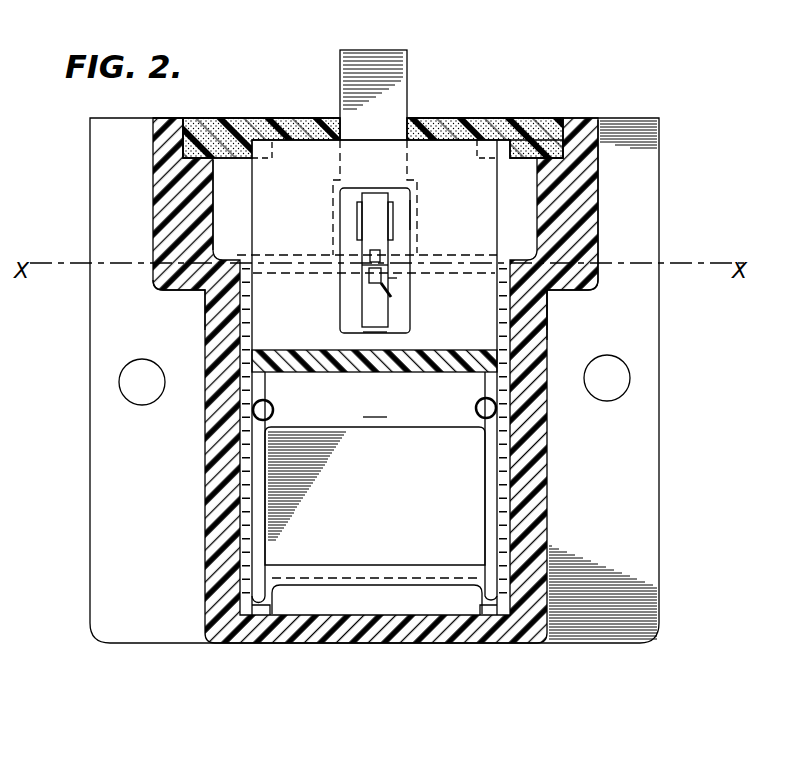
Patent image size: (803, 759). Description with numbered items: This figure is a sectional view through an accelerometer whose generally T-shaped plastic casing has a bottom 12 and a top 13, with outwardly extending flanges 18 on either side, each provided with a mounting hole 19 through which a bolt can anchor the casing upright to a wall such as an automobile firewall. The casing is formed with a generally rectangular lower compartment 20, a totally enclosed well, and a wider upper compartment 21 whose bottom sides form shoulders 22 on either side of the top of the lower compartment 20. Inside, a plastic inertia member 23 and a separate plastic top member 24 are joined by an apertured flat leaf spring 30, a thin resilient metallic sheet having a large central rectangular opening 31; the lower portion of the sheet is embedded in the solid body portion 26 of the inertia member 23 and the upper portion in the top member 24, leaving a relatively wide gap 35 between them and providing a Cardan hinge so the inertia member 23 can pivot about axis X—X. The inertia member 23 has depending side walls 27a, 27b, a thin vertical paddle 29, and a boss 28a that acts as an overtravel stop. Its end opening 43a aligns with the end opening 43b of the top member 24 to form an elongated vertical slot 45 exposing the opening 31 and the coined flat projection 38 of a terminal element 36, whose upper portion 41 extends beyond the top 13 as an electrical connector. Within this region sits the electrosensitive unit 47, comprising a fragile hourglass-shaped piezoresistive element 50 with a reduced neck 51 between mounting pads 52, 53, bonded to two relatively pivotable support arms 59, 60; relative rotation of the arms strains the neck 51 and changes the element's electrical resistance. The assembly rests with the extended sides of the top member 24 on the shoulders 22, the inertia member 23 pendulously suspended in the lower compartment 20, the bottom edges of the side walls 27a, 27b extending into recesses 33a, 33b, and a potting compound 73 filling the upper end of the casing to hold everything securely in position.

The bottom 12 is at (337, 643).
The top 13 is at (167, 118).
The flanges 18 is at (102, 488).
The mounting hole 19 is at (125, 378).
The lower compartment 20 is at (246, 505).
The upper compartment 21 is at (215, 195).
The shoulders 22 is at (525, 252).
The inertia member 23 is at (507, 372).
The top member 24 is at (448, 147).
The body portion 26 is at (375, 404).
The depending side wall 27a is at (262, 563).
The depending side wall 27b is at (493, 548).
The boss 28a is at (274, 402).
The paddle 29 is at (384, 505).
The leaf spring 30 is at (273, 118).
The rectangular opening 31 is at (347, 226).
The recess 33a is at (262, 606).
The recess 33b is at (493, 606).
The gap 35 is at (478, 257).
The terminal element 36 is at (409, 113).
The flat projection 38 is at (392, 213).
The upper portion 41 is at (398, 63).
The end opening 43a is at (340, 333).
The end opening 43b is at (342, 202).
The slot 45 is at (408, 238).
The electrosensitive unit 47 is at (397, 278).
The piezoresistive element 50 is at (372, 281).
The reduced neck 51 is at (364, 267).
The mounting pad 52 is at (380, 283).
The mounting pad 53 is at (368, 252).
The support arm 59 is at (375, 319).
The support arm 60 is at (375, 260).
The potting compound 73 is at (520, 118).